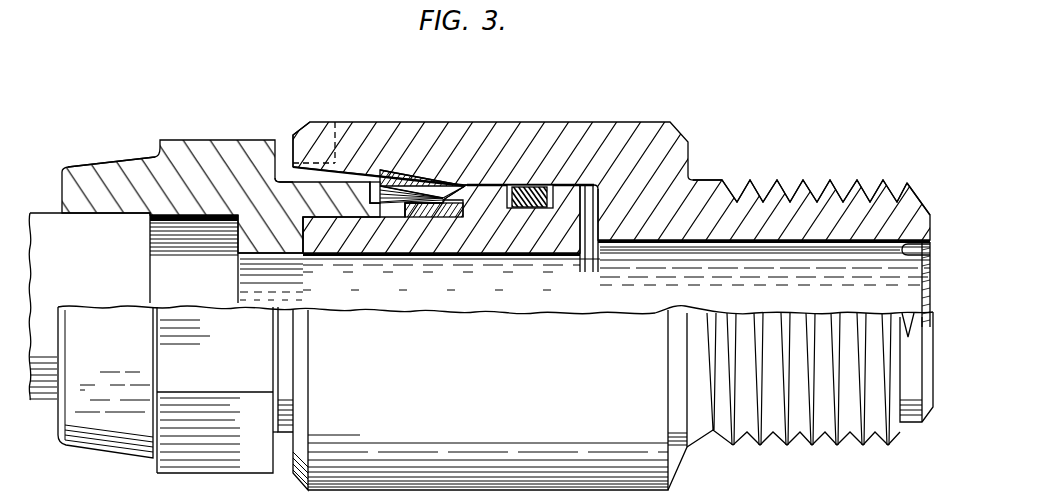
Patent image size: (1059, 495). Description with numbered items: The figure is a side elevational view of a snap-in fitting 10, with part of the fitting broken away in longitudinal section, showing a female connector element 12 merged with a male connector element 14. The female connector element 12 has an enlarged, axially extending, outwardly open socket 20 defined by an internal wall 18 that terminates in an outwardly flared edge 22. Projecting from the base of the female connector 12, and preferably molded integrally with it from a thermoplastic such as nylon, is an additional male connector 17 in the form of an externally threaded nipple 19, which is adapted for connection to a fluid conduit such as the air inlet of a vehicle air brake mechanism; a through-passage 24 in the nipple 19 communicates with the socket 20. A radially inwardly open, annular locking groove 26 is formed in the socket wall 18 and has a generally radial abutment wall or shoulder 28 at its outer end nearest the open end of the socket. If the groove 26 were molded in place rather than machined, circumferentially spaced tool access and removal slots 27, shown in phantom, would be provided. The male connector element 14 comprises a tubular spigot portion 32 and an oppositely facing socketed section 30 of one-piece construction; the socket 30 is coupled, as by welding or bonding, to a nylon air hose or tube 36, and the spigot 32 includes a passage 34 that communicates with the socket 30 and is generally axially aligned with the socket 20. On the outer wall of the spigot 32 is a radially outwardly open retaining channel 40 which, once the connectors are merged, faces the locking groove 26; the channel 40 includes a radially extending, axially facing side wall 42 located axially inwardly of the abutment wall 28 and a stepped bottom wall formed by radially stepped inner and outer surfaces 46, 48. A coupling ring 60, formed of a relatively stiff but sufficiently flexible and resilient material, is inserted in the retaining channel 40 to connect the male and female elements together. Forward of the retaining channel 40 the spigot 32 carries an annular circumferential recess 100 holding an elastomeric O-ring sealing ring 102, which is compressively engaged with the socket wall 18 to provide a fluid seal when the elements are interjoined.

The snap-in fitting 10 is at (360, 83).
The female connector element 12 is at (493, 117).
The male connector element 14 is at (210, 136).
The male connector 17 is at (760, 174).
The internal wall 18 is at (345, 192).
The externally threaded nipple 19 is at (918, 206).
The socket 20 is at (291, 170).
The outwardly flared edge 22 is at (313, 162).
The through-passage 24 is at (921, 247).
The locking groove 26 is at (448, 183).
The tool access and removal slots 27 is at (335, 122).
The abutment wall 28 is at (392, 165).
The socketed section 30 is at (120, 164).
The tubular spigot portion 32 is at (302, 255).
The passage 34 is at (545, 257).
The tube 36 is at (48, 217).
The retaining channel 40 is at (437, 224).
The side wall 42 is at (447, 212).
The inner surface 46 is at (423, 217).
The outer surface 48 is at (376, 196).
The coupling ring 60 is at (418, 178).
The annular circumferential recess 100 is at (548, 184).
The sealing ring 102 is at (527, 187).